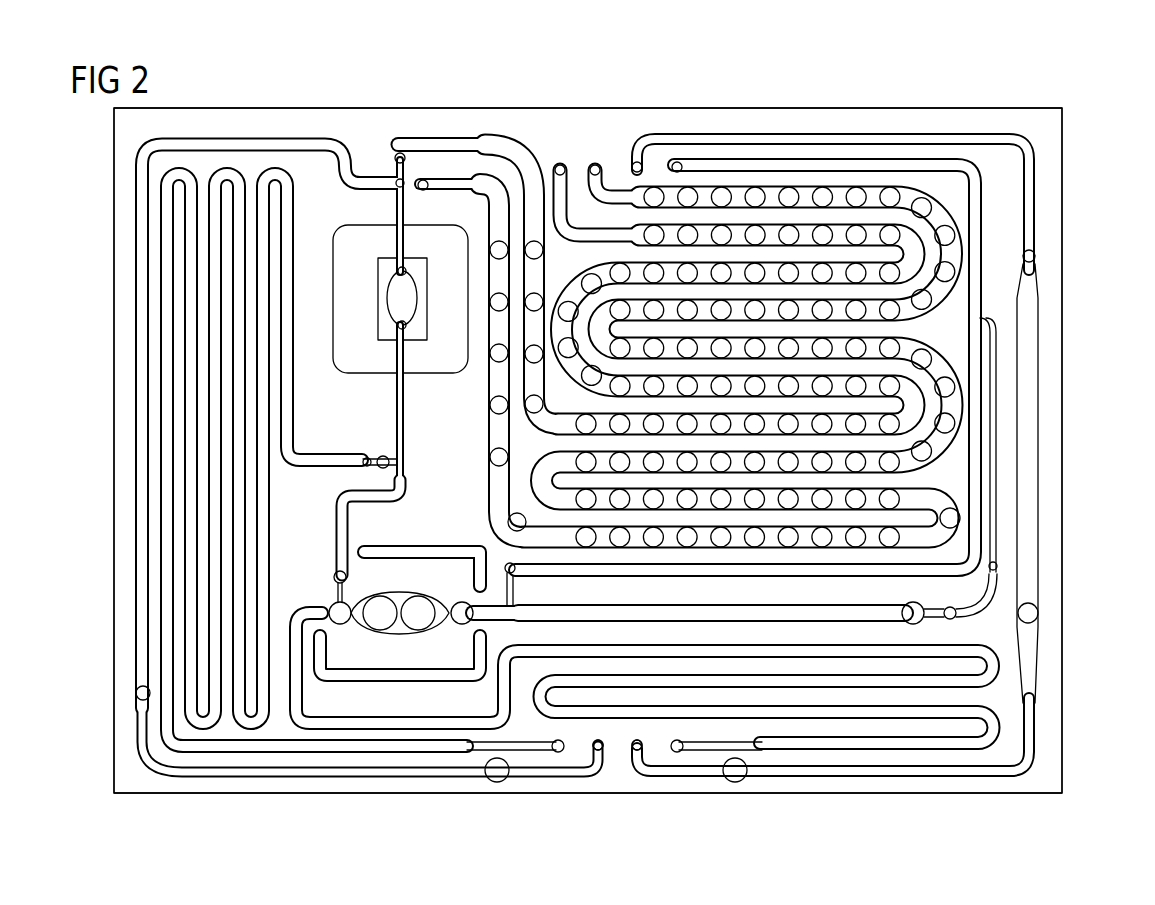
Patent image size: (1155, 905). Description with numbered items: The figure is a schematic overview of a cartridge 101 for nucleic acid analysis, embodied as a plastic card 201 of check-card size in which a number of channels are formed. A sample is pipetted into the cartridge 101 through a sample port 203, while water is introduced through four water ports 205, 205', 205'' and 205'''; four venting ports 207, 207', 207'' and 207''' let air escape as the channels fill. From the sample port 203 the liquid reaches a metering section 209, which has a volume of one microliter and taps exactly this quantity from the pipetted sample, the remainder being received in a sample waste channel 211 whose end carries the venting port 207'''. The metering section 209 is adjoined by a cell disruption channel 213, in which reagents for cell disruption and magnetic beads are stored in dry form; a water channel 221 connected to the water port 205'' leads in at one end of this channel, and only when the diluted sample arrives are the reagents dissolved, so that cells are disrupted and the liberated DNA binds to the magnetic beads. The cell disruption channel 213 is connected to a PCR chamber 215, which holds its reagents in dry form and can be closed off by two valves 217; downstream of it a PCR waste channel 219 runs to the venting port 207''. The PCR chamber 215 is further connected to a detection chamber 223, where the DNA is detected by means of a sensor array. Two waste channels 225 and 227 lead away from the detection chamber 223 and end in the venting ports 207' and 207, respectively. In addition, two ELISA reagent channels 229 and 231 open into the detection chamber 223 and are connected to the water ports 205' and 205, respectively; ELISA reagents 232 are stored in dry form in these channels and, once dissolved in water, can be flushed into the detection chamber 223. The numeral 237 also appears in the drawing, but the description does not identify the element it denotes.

The cartridge 101 is at (1044, 93).
The plastic card 201 is at (1054, 132).
The sample port 203 is at (1034, 254).
The water port 205 is at (584, 150).
The water port 205' is at (608, 131).
The water port 205'' is at (824, 168).
The water port 205''' is at (745, 318).
The venting port 207 is at (600, 785).
The venting port 207' is at (522, 785).
The venting port 207'' is at (648, 785).
The venting port 207''' is at (716, 785).
The metering section 209 is at (1003, 455).
The sample waste channel 211 is at (1036, 655).
The cell disruption channel 213 is at (882, 613).
The PCR chamber 215 is at (345, 600).
The valves 217 is at (447, 624).
The PCR waste channel 219 is at (1000, 735).
The water channel 221 is at (505, 563).
The detection chamber 223 is at (365, 362).
The waste channel 225 is at (293, 440).
The waste channel 227 is at (307, 141).
The ELISA reagent channel 229 is at (497, 496).
The ELISA reagent channel 231 is at (523, 228).
The ELISA reagents 232 is at (496, 356).
The electrodes 237 is at (925, 302).